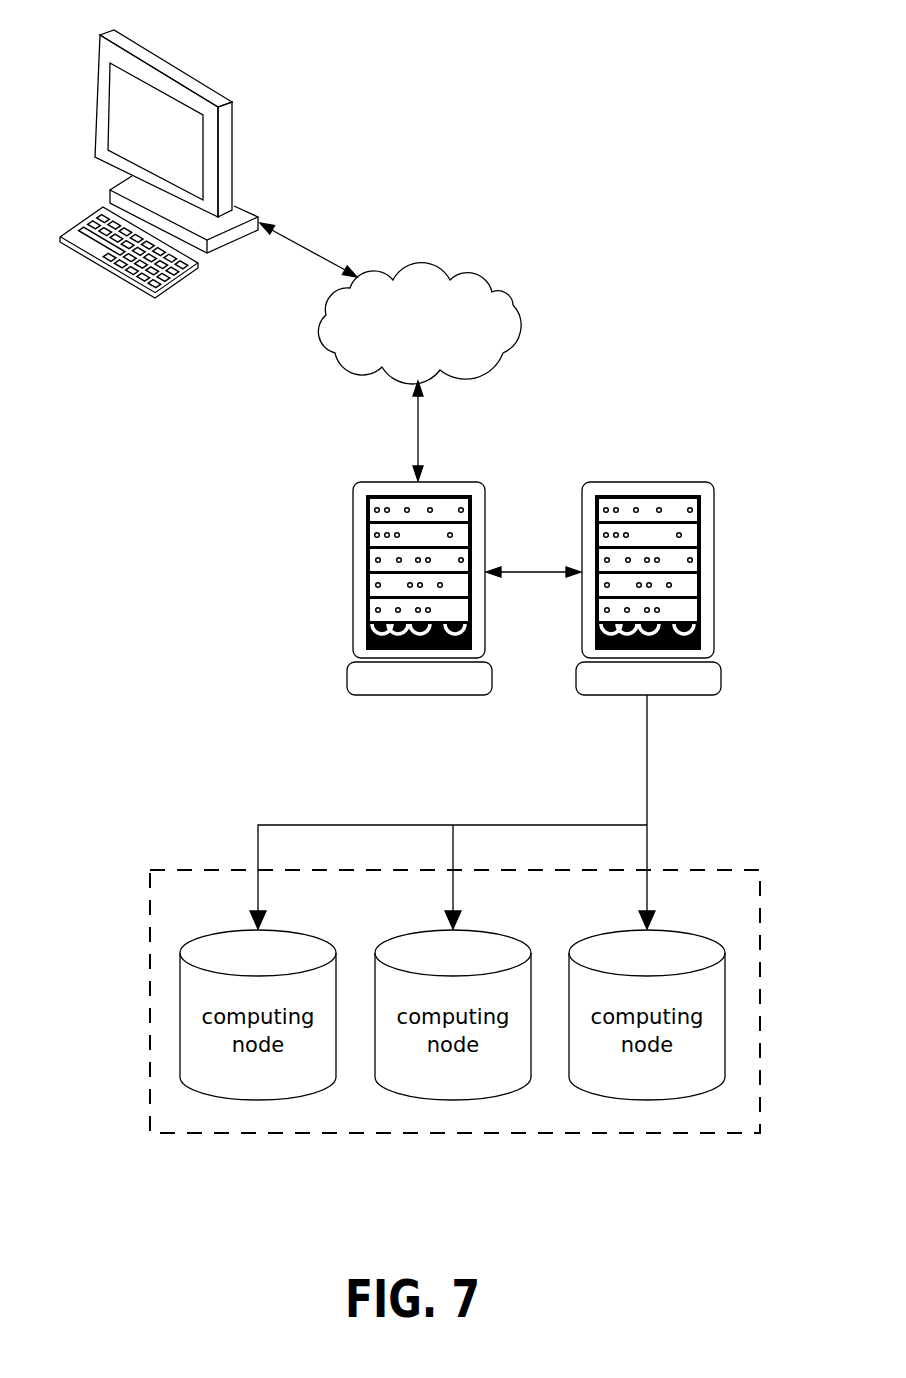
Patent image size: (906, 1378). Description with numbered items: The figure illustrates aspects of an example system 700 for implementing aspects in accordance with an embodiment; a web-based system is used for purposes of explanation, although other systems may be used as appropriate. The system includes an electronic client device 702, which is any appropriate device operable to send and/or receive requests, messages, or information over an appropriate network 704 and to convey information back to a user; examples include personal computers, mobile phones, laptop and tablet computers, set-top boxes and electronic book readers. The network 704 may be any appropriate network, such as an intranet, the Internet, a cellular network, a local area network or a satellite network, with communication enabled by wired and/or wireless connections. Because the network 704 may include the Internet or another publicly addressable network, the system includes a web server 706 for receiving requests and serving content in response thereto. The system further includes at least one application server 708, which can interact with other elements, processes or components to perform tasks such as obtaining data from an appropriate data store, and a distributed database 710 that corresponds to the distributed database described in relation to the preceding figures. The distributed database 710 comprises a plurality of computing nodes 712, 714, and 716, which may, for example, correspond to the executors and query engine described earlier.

The system 700 is at (700, 315).
The electronic client device 702 is at (178, 72).
The network 704 is at (457, 277).
The web server 706 is at (352, 573).
The application server 708 is at (577, 673).
The distributed database 710 is at (187, 1135).
The computing node 712 is at (257, 1097).
The computing node 714 is at (453, 1097).
The computing node 716 is at (645, 1097).